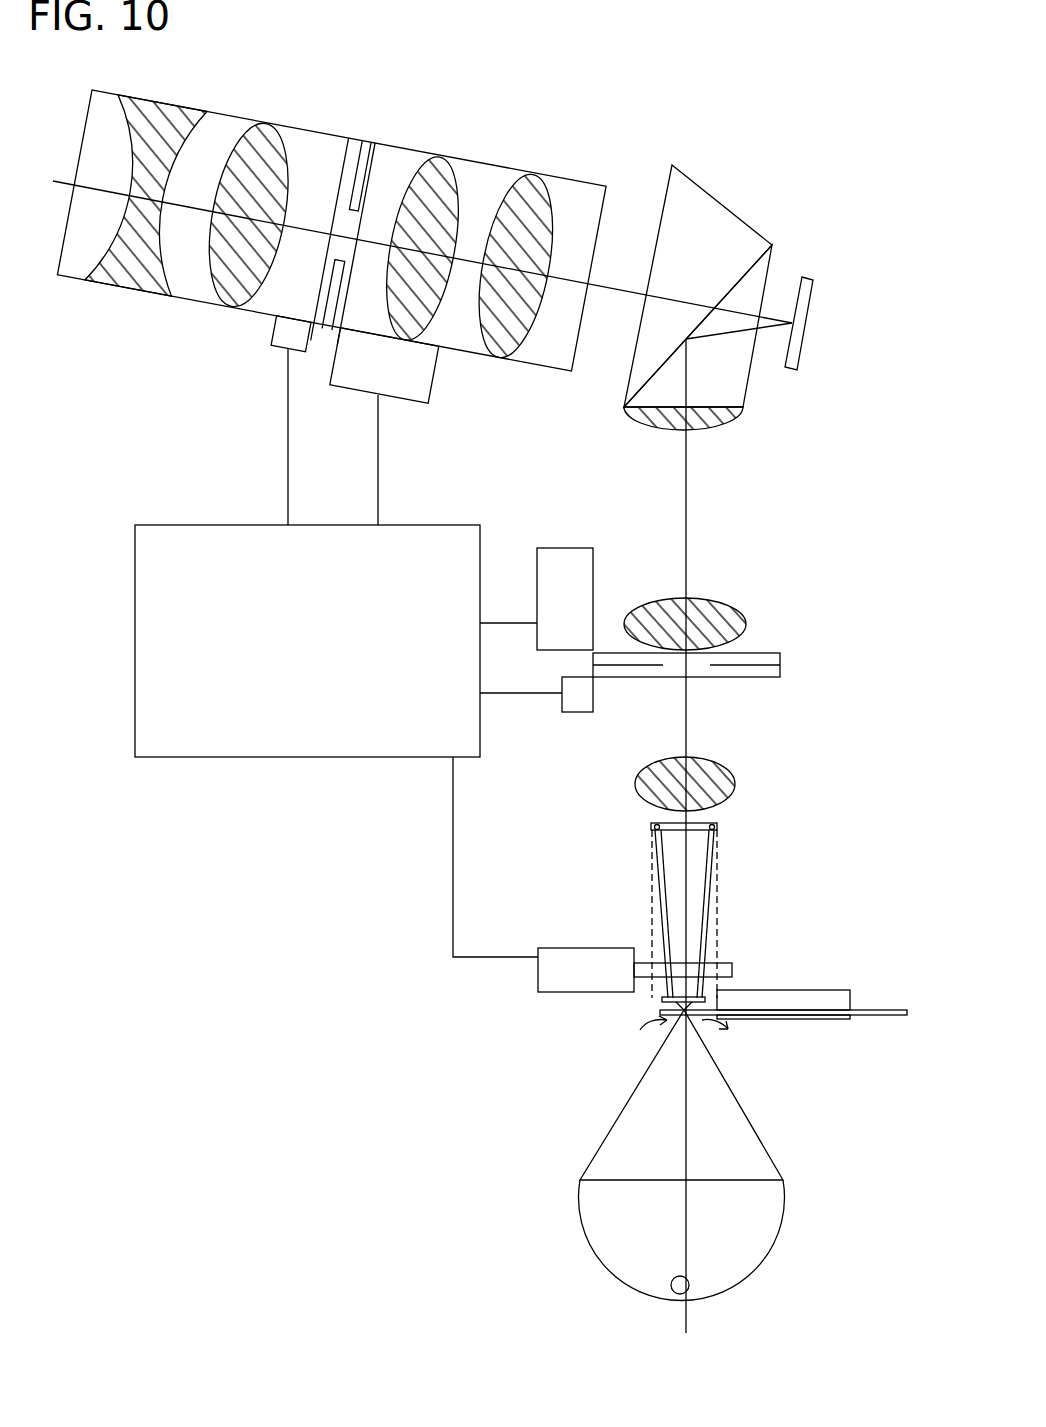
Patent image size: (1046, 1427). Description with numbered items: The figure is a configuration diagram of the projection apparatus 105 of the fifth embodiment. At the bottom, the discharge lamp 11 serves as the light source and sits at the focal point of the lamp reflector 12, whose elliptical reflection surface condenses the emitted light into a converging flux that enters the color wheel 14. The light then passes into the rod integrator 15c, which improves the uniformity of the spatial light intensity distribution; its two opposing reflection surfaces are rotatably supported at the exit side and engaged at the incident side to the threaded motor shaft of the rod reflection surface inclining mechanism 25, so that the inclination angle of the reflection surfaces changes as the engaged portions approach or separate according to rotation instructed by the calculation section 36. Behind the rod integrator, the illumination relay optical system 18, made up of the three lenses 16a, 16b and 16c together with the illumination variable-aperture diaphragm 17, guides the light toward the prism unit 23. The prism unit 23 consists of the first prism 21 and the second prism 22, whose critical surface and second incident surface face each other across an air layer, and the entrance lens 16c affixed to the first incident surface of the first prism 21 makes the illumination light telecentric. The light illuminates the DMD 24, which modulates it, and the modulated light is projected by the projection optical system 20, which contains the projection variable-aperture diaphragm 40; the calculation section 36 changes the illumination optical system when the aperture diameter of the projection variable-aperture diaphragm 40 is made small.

The projection apparatus 105 is at (718, 148).
The projection optical system 20 is at (230, 130).
The projection variable-aperture diaphragm 40 is at (365, 167).
The prism unit 23 is at (778, 150).
The second prism 22 is at (727, 222).
The first prism 21 is at (757, 277).
The DMD 24 is at (803, 307).
The illumination relay optical system 18 is at (817, 415).
The entrance lens 16c is at (723, 418).
The lens 16b is at (728, 620).
The lens 16a is at (723, 777).
The illumination variable-aperture diaphragm 17 is at (737, 670).
The calculation section 36 is at (148, 642).
The rod reflection surface inclining mechanism 25 is at (583, 957).
The rod integrator 15c is at (693, 895).
The color wheel 14 is at (785, 1000).
The lamp reflector 12 is at (615, 1268).
The discharge lamp 11 is at (690, 1285).